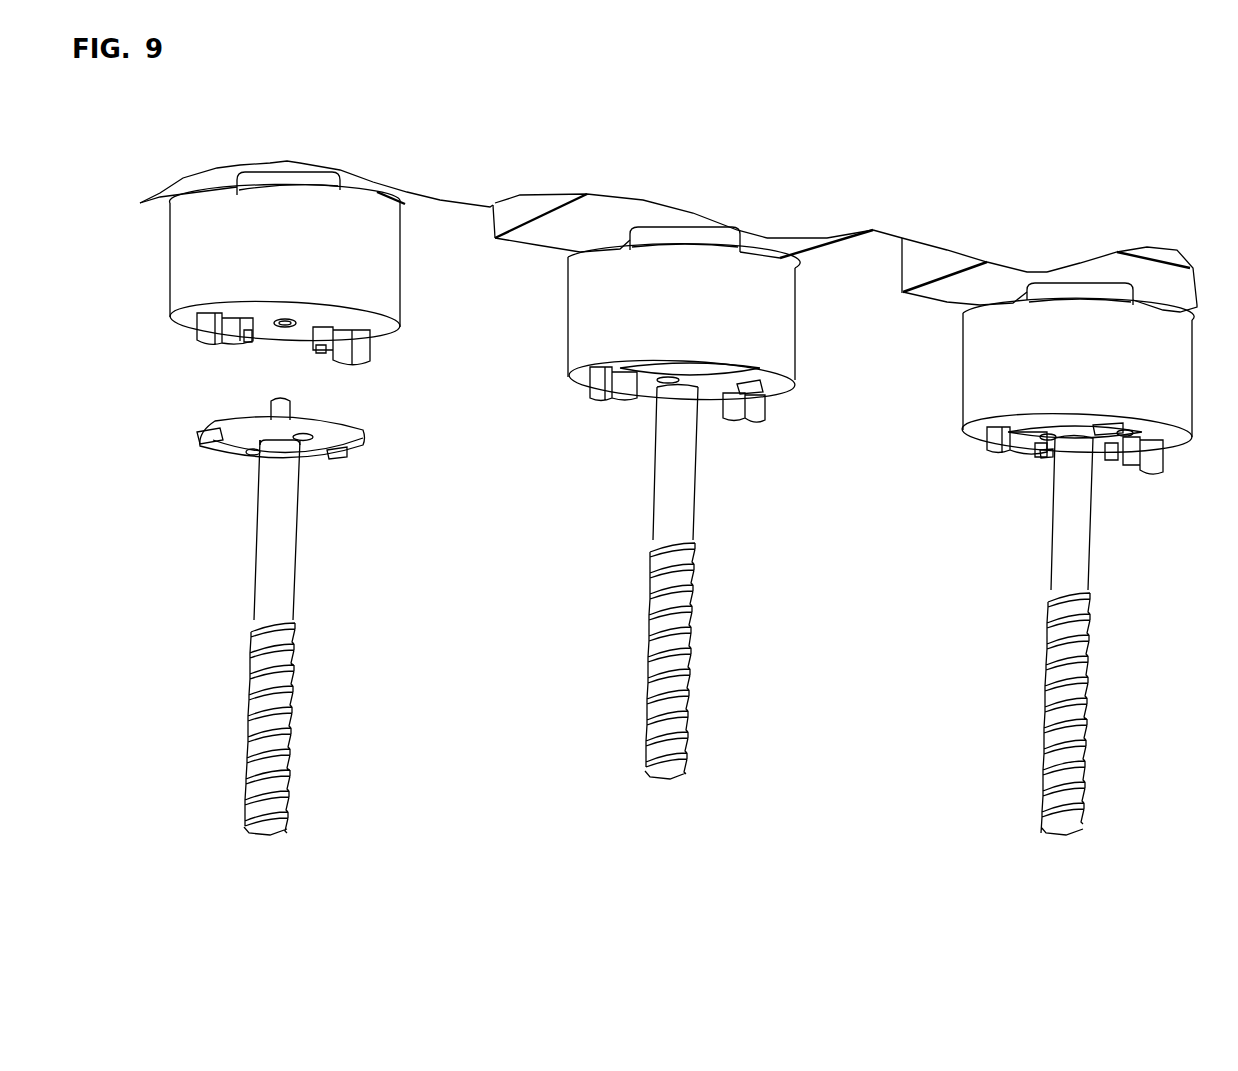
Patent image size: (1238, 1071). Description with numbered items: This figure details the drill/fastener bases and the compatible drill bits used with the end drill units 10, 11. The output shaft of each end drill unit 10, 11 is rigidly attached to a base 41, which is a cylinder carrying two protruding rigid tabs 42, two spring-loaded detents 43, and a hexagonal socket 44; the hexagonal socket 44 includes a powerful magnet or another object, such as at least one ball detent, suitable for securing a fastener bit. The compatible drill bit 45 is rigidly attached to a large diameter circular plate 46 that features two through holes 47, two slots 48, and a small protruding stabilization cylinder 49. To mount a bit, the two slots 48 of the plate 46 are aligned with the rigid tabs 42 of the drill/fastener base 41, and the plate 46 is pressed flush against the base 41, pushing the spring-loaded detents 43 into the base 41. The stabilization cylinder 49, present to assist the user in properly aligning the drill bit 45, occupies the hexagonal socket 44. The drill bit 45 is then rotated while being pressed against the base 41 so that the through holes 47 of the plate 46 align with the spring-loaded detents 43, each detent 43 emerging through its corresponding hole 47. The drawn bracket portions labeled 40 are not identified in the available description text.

The end drill unit 10 is at (546, 249).
The end drill unit 11 is at (380, 190).
The fastener mounting assembly 40 is at (158, 199).
The base 41 is at (323, 262).
The rigid tabs 42 is at (206, 339).
The spring-loaded detents 43 is at (320, 349).
The hexagonal socket 44 is at (284, 318).
The drill bit 45 is at (283, 520).
The circular plate 46 is at (222, 446).
The through holes 47 is at (309, 436).
The slots 48 is at (206, 431).
The stabilization cylinder 49 is at (291, 405).